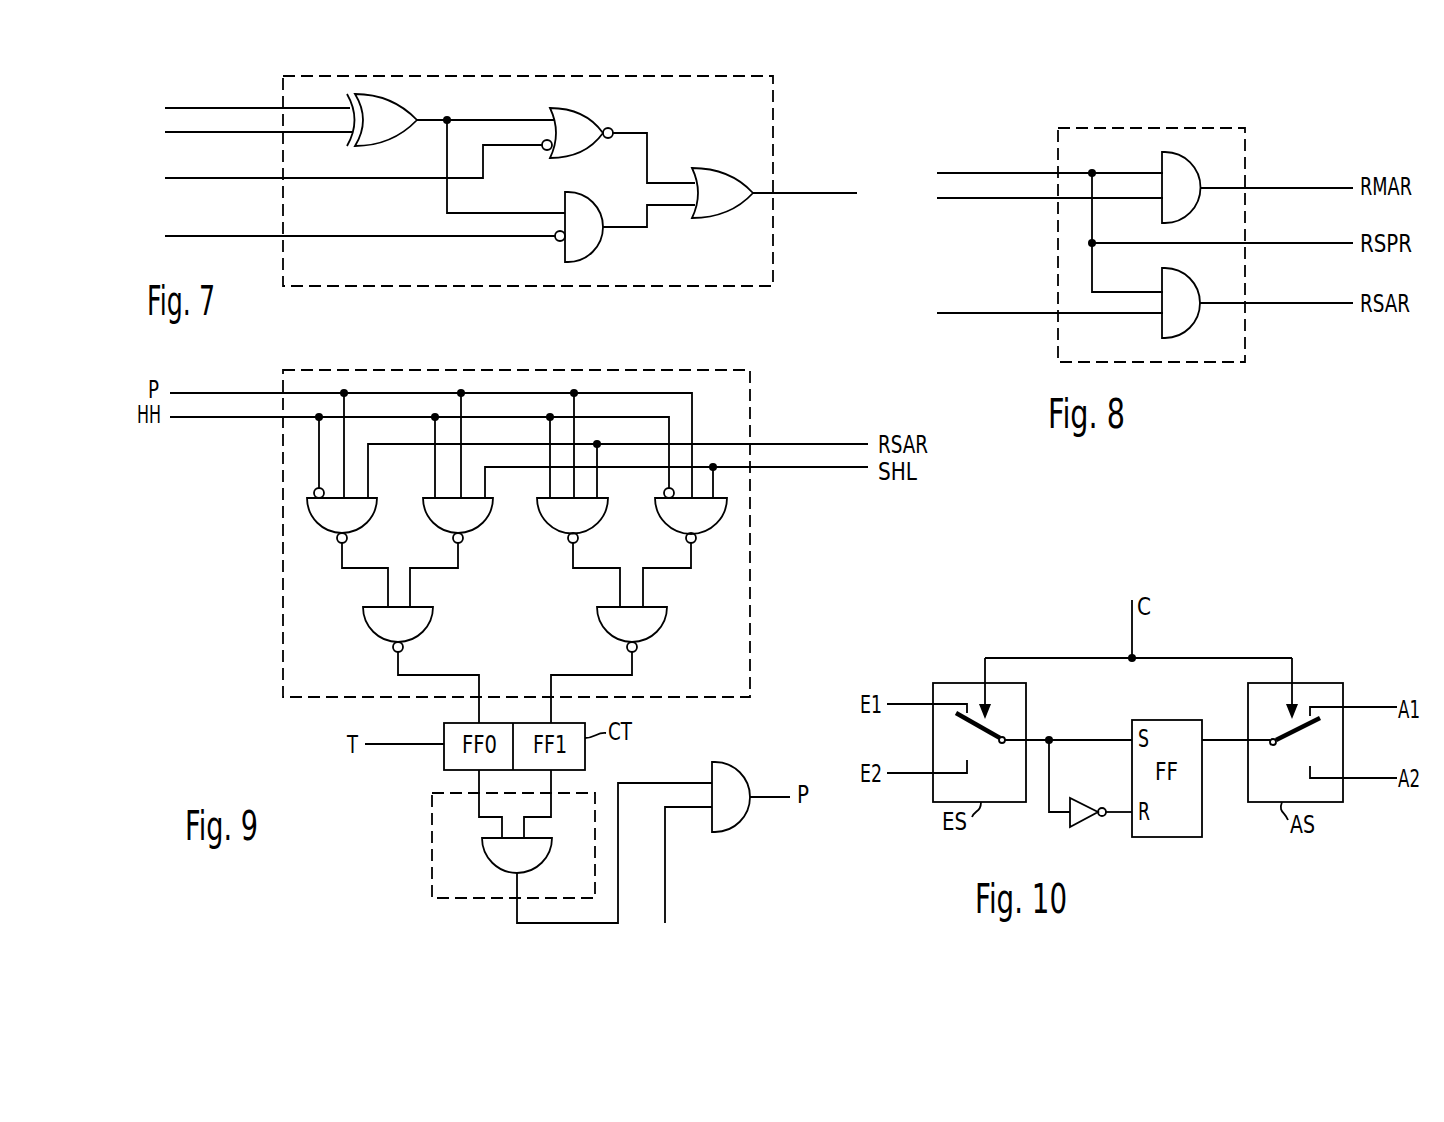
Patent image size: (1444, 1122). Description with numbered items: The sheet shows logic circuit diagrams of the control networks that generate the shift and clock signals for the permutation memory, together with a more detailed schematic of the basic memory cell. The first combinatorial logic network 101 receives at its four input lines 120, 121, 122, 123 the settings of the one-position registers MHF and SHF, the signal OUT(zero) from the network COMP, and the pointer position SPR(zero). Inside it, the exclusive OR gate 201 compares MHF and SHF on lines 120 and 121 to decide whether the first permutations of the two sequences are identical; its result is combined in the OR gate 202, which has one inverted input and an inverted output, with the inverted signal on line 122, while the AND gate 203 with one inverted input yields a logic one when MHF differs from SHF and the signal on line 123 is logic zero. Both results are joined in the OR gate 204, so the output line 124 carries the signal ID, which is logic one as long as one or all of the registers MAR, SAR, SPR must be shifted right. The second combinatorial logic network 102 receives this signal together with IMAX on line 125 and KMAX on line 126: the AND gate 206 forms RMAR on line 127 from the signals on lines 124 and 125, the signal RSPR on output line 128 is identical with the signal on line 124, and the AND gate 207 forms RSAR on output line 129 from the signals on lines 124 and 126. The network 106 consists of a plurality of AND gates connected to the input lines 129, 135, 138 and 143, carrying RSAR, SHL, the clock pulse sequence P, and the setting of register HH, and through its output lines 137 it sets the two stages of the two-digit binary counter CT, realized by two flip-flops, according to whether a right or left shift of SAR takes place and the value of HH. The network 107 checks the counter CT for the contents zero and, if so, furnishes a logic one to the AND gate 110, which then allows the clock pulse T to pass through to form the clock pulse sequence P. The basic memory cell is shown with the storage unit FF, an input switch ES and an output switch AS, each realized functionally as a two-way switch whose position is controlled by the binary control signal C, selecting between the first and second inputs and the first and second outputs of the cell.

In FIG. 7, the first combinatorial logic network 101 is at (603, 78).
In FIG. 7, the input line 120 is at (257, 94).
In FIG. 7, the input line 121 is at (258, 119).
In FIG. 7, the input line 122 is at (353, 161).
In FIG. 7, the input line 123 is at (360, 220).
In FIG. 7, the output line 124 is at (805, 179).
In FIG. 8, the output line 124 is at (1050, 159).
In FIG. 7, the exclusive OR gate 201 is at (393, 112).
In FIG. 7, the OR gate 202 is at (595, 120).
In FIG. 7, the AND gate 203 is at (587, 218).
In FIG. 7, the OR gate 204 is at (715, 176).
In FIG. 8, the second combinatorial logic network 102 is at (1155, 128).
In FIG. 8, the line 125 is at (1050, 213).
In FIG. 8, the line 126 is at (1050, 297).
In FIG. 8, the line 127 is at (1276, 173).
In FIG. 8, the output line 128 is at (1222, 231).
In FIG. 8, the output line 129 is at (1276, 291).
In FIG. 9, the output line 129 is at (618, 457).
In FIG. 8, the AND gate 206 is at (1182, 170).
In FIG. 8, the AND gate 207 is at (1182, 290).
In FIG. 9, the combinatorial logic network 106 is at (598, 370).
In FIG. 9, the line 138 is at (431, 430).
In FIG. 9, the input line 143 is at (419, 450).
In FIG. 9, the input line 135 is at (676, 481).
In FIG. 9, the output lines to counter 137 is at (533, 674).
In FIG. 9, the combinatorial logic network 107 is at (432, 852).
In FIG. 9, the AND gate 110 is at (732, 808).